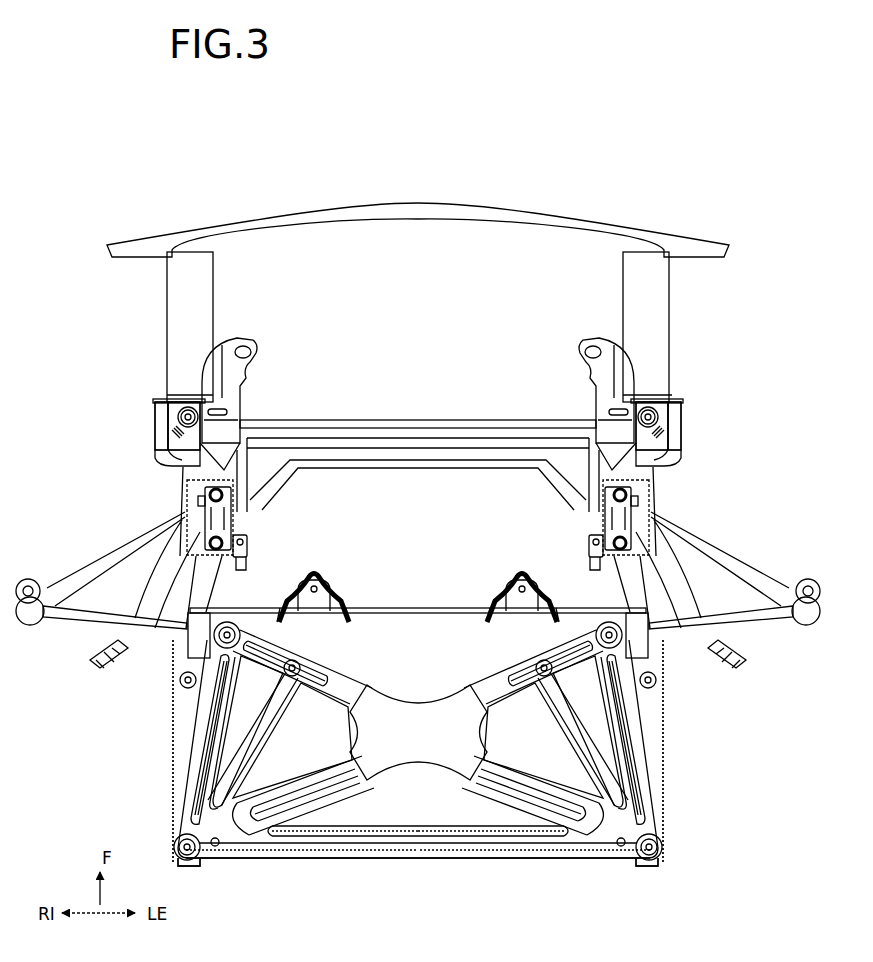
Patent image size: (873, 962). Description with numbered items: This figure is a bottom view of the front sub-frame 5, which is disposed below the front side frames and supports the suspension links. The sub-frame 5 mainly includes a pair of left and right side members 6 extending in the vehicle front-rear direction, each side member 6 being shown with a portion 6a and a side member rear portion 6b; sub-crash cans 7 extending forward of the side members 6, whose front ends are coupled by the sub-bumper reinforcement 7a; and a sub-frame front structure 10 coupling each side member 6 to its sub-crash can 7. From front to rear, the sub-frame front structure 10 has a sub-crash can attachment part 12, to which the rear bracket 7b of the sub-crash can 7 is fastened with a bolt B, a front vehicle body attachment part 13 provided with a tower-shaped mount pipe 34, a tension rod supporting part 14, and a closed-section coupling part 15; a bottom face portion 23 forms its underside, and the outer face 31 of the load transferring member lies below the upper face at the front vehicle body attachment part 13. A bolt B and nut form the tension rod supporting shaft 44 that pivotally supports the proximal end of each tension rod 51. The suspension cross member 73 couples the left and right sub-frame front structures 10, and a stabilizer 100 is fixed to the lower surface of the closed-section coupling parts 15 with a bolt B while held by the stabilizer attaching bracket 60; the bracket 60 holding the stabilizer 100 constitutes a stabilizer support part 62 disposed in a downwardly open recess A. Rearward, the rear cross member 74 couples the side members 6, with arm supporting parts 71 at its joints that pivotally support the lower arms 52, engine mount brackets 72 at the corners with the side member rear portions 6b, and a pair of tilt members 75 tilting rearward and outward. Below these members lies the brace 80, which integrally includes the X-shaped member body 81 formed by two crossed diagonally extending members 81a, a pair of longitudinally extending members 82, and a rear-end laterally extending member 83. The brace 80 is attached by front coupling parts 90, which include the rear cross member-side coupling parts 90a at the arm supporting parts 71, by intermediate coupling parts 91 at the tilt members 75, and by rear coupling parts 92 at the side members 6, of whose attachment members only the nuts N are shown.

The front sub-frame 5 is at (708, 212).
The side member 6 is at (172, 808).
The strut member 6a is at (255, 560).
The side member rear portion 6b is at (172, 773).
The sub-crash can 7 is at (215, 280).
The sub-bumper reinforcement 7a is at (522, 212).
The rear bracket 7b is at (176, 400).
The sub-frame front structure 10 is at (142, 444).
The sub-crash can attachment part 12 is at (160, 401).
The front vehicle body attachment part 13 is at (155, 426).
The tension rod supporting part 14 is at (165, 464).
The closed-section coupling part 15 is at (192, 518).
The bottom face portion 23 is at (243, 432).
The outer face 31 is at (155, 409).
The mount pipe 34 is at (185, 410).
The tension rod supporting shaft 44 is at (268, 432).
The tension rod 51 is at (95, 555).
The lower arm 52 is at (60, 625).
The stabilizer attaching bracket 60 is at (240, 508).
The stabilizer support part 62 is at (205, 503).
The arm supporting part 71 is at (180, 650).
The engine mount bracket 72 is at (250, 700).
The suspension cross member 73 is at (400, 418).
The rear cross member 74 is at (410, 607).
The tilt member 75 is at (250, 750).
The brace 80 is at (540, 872).
The X-shaped member body 81 is at (322, 804).
The diagonally extending member 81a is at (362, 786).
The longitudinally extending member 82 is at (200, 737).
The rear-end laterally extending member 83 is at (392, 860).
The front coupling part 90 is at (266, 620).
The rear cross member-side coupling part 90a is at (294, 608).
The intermediate coupling part 91 is at (299, 664).
The rear coupling part 92 is at (178, 860).
The stabilizer 100 is at (447, 461).
The nut N is at (680, 847).
The recess A is at (185, 522).
The bolt B is at (238, 470).